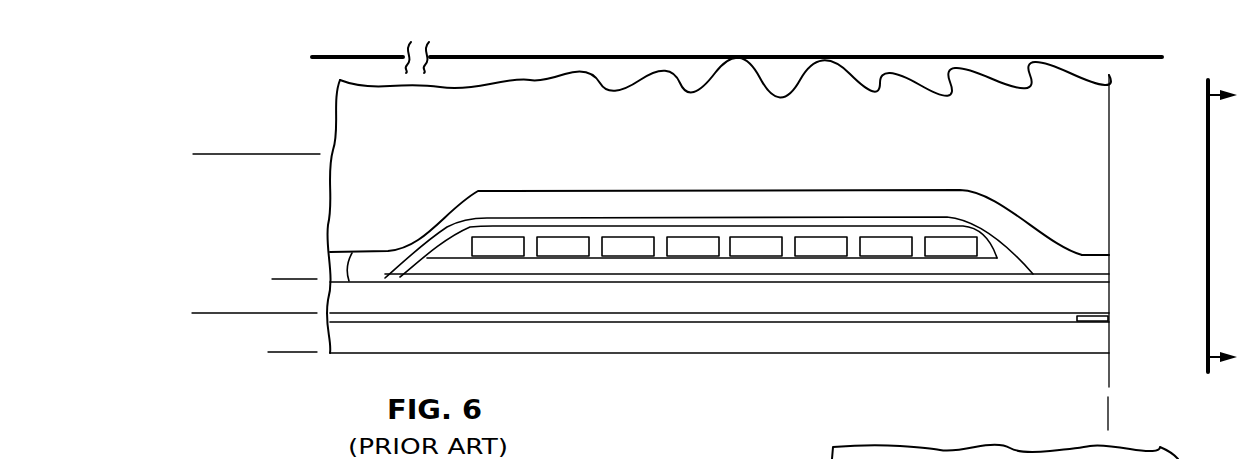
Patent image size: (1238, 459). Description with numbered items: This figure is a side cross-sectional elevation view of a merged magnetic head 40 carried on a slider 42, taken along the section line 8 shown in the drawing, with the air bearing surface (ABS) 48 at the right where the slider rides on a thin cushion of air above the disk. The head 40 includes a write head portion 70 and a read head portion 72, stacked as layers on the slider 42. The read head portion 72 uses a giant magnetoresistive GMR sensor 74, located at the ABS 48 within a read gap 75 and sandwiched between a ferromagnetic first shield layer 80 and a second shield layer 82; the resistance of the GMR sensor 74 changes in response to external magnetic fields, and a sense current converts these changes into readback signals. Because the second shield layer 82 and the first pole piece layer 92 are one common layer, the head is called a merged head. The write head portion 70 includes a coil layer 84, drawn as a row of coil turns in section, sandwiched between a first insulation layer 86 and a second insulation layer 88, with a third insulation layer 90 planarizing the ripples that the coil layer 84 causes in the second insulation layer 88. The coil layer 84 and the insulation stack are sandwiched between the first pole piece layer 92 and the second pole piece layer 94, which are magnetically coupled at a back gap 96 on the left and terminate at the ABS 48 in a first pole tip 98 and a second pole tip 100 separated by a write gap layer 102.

The section line 8- 8 is at (1145, 44).
The magnetic head 40 is at (312, 80).
The slider 42 is at (1090, 104).
The air bearing surface 48 is at (1108, 393).
The write head portion 70 is at (288, 265).
The read head portion 72 is at (287, 366).
The GMR sensor 74 is at (1110, 320).
The read gap layer 75 is at (673, 318).
The first shield layer 80 is at (853, 340).
The second shield layer 82 is at (719, 355).
The first pole piece layer 92 is at (958, 298).
The coil layer 84 is at (758, 247).
The first insulation layer 86 is at (573, 265).
The second insulation layer 88 is at (990, 253).
The third insulation layer 90 is at (500, 222).
The second pole piece layer 94 is at (868, 193).
The back gap 96 is at (354, 257).
The first pole tip 98 is at (1110, 297).
The second pole tip 100 is at (1110, 255).
The write gap layer 102 is at (1110, 278).